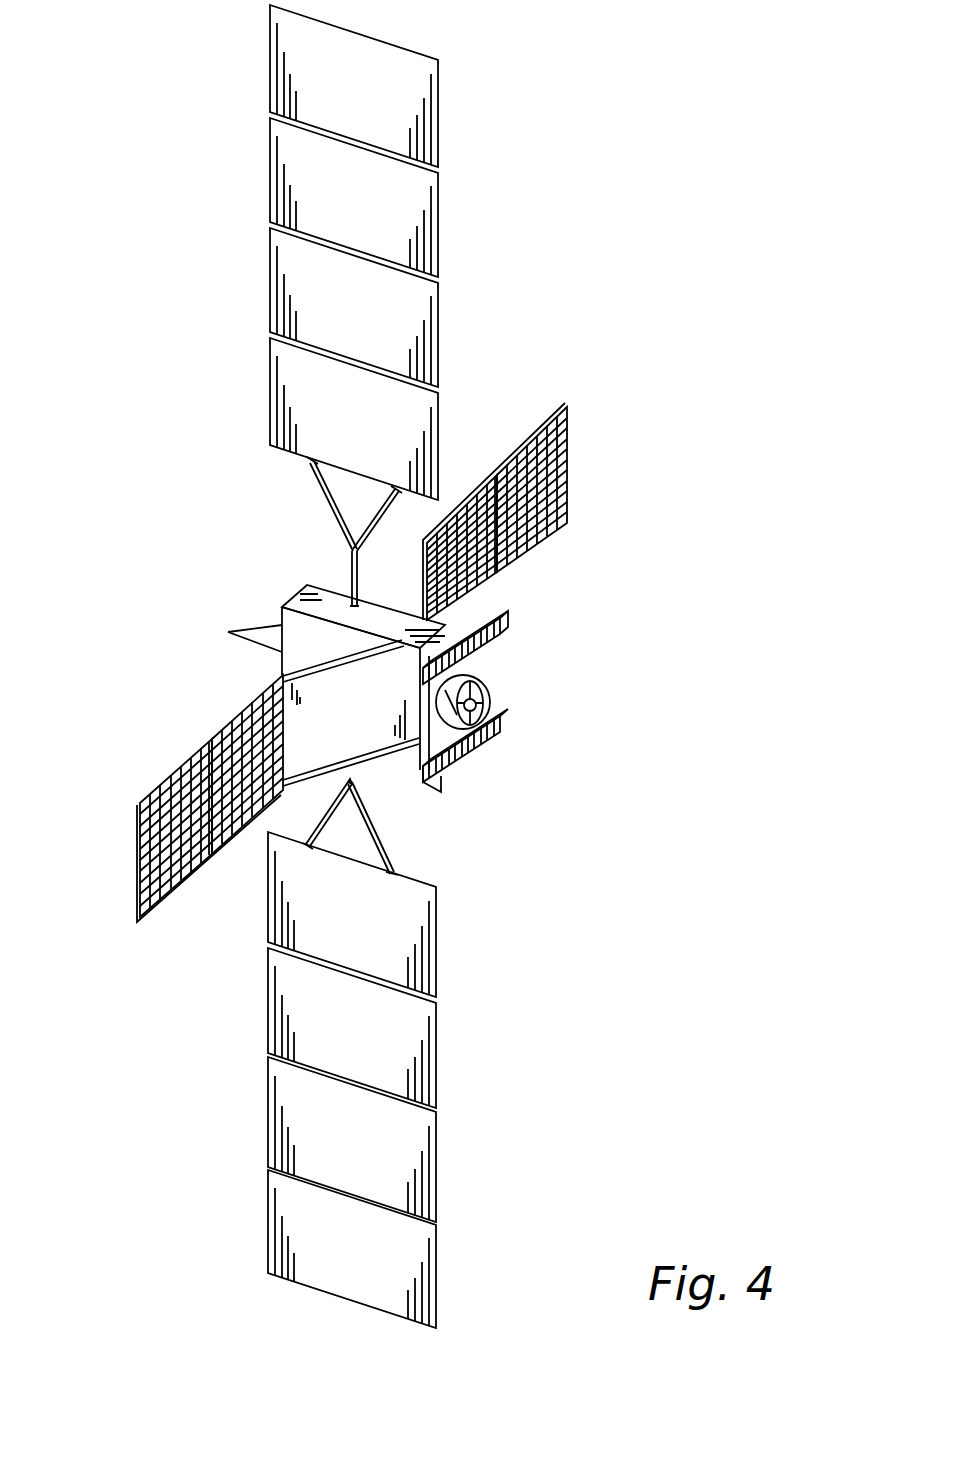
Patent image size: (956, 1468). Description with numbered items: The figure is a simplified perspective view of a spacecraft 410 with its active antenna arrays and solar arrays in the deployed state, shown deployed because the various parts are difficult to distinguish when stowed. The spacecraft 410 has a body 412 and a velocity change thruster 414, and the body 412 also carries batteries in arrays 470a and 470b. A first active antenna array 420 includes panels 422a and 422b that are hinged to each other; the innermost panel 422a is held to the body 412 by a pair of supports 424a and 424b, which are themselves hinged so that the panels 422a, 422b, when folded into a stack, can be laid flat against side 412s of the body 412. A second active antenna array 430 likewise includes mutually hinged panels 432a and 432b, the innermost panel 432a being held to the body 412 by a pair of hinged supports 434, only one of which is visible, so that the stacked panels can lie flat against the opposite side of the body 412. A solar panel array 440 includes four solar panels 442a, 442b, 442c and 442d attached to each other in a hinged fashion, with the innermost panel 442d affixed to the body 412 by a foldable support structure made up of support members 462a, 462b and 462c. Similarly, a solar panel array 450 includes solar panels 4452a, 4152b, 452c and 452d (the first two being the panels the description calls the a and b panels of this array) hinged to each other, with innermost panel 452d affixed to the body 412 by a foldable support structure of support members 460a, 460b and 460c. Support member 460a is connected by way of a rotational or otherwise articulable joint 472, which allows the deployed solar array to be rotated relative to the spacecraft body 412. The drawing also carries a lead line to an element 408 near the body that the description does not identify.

The spacecraft 410 is at (53, 616).
The solar panel 450 is at (258, 8).
The solar panel 4452a is at (438, 120).
The solar panel 4152b is at (438, 222).
The solar panel 452c is at (438, 326).
The solar panel 452d is at (438, 398).
The support member 460a is at (353, 569).
The support member 460b is at (322, 484).
The support member 460c is at (374, 520).
The body 412 is at (296, 599).
The body side face 408 is at (228, 632).
The side of spacecraft body 412s is at (243, 668).
The rotational or otherwise articulable joint 472 is at (352, 634).
The support 424a is at (366, 655).
The support 424b is at (395, 760).
The support 434 is at (424, 588).
The battery array 470a is at (498, 641).
The battery array 470b is at (486, 735).
The velocity change thruster 414 is at (484, 710).
The first active antenna array 420 is at (277, 672).
The innermost panel 422a is at (285, 774).
The panel 422b is at (171, 893).
The second active antenna array 430 is at (567, 403).
The innermost panel 432a is at (491, 598).
The panel 432b is at (569, 470).
The support member 462a is at (353, 774).
The support member 462b is at (394, 868).
The support member 462c is at (310, 846).
The solar panel 440 is at (253, 829).
The solar panel 442a is at (436, 1270).
The solar panel 442b is at (436, 1166).
The solar panel 442c is at (436, 1048).
The solar panel 442d is at (436, 955).